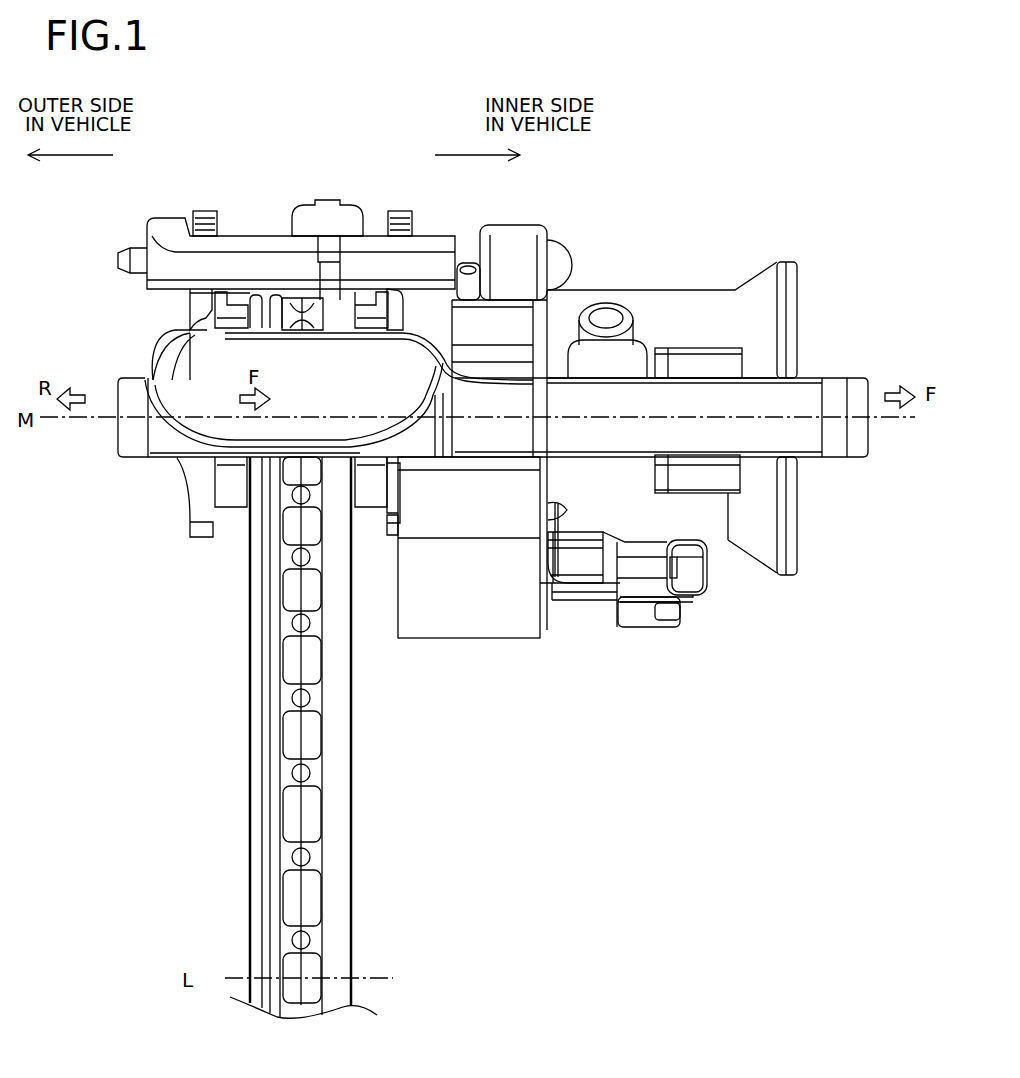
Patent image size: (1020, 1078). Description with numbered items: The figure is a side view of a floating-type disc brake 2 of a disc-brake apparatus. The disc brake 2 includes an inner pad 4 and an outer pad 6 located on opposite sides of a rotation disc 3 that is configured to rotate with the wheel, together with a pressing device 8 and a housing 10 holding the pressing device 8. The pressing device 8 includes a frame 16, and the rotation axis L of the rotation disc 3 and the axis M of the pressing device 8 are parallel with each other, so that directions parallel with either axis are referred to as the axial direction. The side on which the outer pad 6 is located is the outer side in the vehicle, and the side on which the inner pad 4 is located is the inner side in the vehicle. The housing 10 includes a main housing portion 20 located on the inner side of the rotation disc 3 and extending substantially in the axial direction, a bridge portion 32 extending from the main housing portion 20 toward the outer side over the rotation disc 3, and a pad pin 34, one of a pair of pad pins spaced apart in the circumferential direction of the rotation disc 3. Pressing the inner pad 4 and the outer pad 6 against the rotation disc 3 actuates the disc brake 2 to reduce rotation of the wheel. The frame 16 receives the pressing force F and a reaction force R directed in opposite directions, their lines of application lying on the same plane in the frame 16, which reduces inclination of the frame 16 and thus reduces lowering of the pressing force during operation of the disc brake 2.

The disc brake 2 is at (565, 691).
The rotation disc 3 is at (335, 708).
The inner pad 4 is at (367, 310).
The outer pad 6 is at (230, 310).
The pressing device 8 is at (752, 584).
The housing 10 is at (711, 255).
The frame 16 is at (805, 390).
The main housing portion 20 is at (615, 300).
The bridge portion 32 is at (262, 245).
The pad pin 34 is at (460, 258).